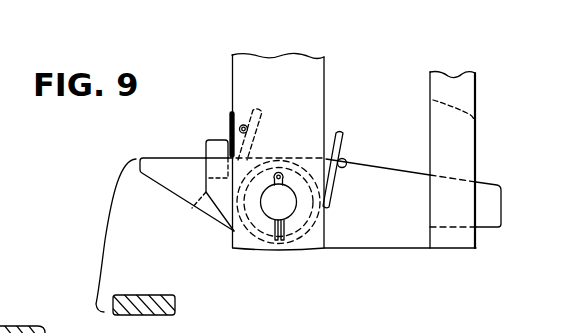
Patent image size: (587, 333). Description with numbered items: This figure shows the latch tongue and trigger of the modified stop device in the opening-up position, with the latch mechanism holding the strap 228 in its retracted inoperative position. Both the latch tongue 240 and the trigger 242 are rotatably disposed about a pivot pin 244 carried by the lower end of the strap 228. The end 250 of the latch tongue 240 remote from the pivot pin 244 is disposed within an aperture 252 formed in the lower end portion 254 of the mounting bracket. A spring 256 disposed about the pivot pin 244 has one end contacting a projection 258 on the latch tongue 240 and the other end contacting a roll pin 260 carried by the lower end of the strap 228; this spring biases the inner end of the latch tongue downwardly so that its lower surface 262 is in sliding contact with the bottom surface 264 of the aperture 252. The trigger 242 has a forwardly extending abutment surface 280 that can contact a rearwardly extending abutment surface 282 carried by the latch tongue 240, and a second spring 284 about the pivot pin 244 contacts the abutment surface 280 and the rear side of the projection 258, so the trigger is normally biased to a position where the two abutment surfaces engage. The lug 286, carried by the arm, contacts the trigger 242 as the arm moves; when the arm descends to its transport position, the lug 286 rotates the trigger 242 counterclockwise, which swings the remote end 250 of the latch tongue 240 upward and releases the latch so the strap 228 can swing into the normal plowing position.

The strap 228 is at (300, 62).
The latch tongue 240 is at (397, 159).
The trigger 242 is at (157, 167).
The pivot pin 244 is at (290, 210).
The end of the latch tongue 250 is at (503, 215).
The aperture 252 is at (477, 123).
The lower end portion 254 is at (472, 87).
The spring 256 is at (324, 137).
The projection 258 is at (341, 159).
The roll pin 260 is at (246, 124).
The lower surface 262 is at (377, 249).
The bottom surface 264 is at (456, 227).
The abutment surface 280 is at (213, 143).
The abutment surface 282 is at (195, 206).
The spring 284 is at (230, 118).
The lug 286 is at (152, 300).